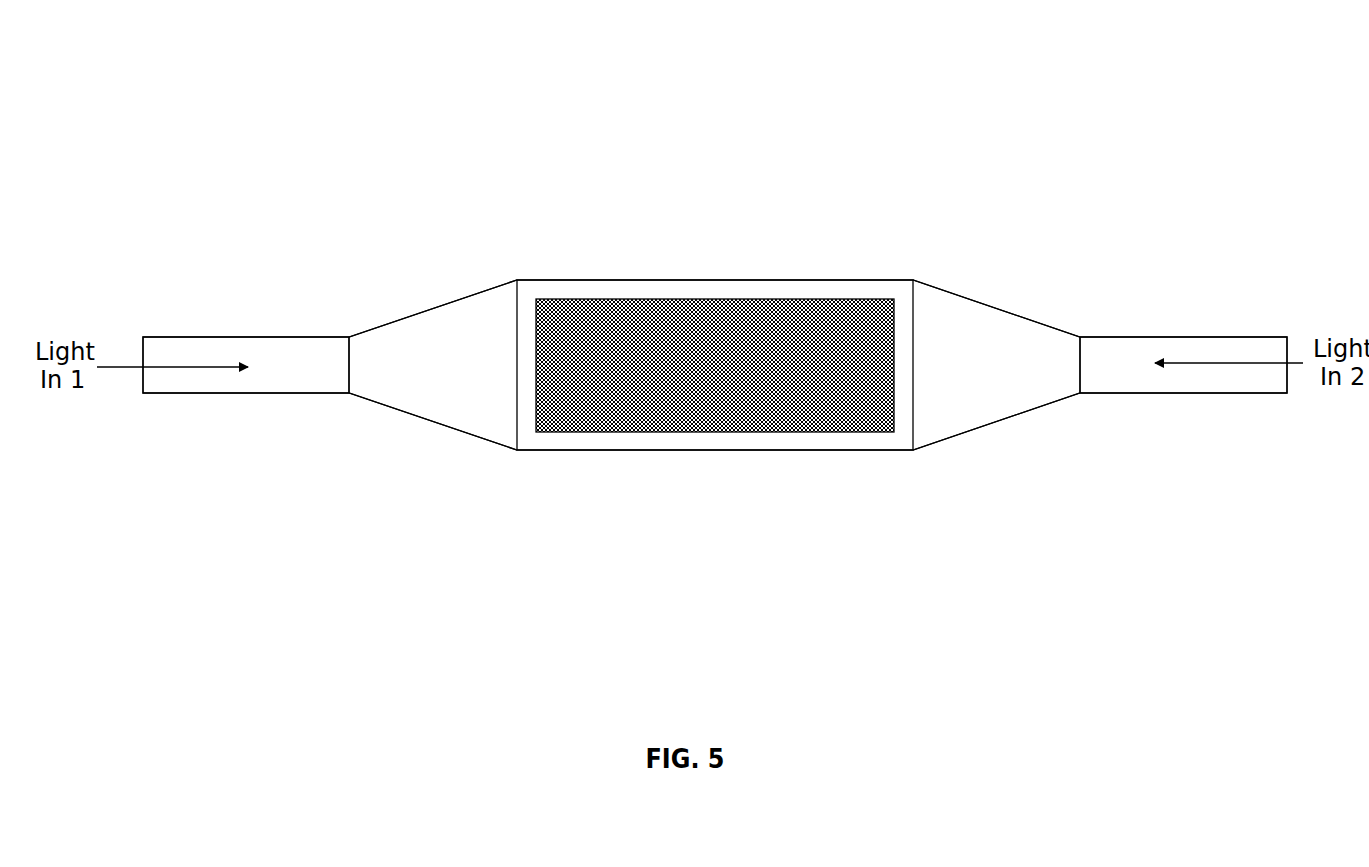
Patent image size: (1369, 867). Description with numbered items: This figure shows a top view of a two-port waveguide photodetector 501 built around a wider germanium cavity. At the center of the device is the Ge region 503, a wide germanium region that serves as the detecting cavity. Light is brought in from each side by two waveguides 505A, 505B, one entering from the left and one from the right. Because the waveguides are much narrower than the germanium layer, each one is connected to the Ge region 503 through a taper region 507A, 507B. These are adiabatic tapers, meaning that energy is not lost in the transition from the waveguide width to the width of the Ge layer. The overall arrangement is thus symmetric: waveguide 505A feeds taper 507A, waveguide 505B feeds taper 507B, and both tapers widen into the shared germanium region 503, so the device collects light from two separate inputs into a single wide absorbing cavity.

The two-port waveguide photodetector 501 is at (482, 168).
The Ge region 503 is at (837, 300).
The waveguide 505A is at (312, 337).
The waveguide 505B is at (1186, 337).
The taper region 507A is at (452, 301).
The taper region 507B is at (1000, 310).